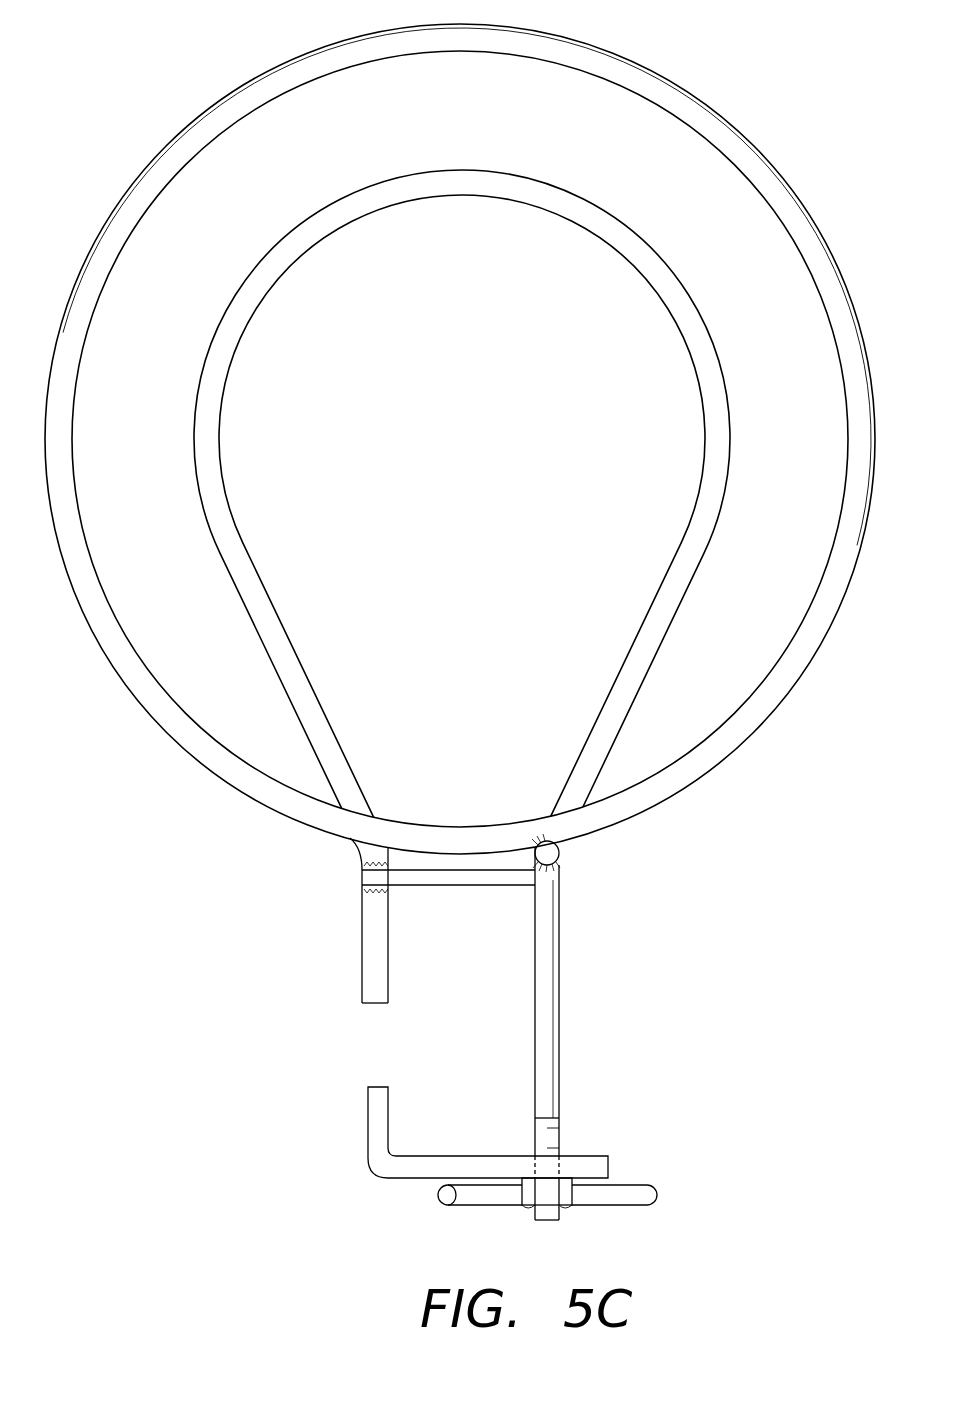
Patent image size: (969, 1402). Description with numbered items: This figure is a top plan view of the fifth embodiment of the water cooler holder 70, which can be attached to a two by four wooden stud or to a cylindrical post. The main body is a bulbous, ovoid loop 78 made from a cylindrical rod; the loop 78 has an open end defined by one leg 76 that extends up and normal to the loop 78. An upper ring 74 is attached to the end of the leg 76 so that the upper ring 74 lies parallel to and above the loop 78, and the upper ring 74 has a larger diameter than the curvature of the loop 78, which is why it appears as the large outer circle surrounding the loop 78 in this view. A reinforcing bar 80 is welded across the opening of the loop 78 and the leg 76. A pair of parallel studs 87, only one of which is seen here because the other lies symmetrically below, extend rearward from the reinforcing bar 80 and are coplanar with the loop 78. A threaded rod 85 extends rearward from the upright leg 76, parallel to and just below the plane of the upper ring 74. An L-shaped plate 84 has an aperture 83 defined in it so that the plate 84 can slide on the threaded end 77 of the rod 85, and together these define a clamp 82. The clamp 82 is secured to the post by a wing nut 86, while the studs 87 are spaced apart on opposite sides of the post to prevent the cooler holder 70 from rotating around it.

The water cooler holder 70 is at (768, 91).
The upper ring 74 is at (405, 57).
The bulbous, ovoid loop 78 is at (707, 450).
The reinforcing bar 80 is at (412, 878).
The parallel studs 87 is at (383, 967).
The leg 76 is at (548, 860).
The threaded rod 85 is at (545, 990).
The clamp 82 is at (593, 1053).
The threaded end 77 is at (560, 1128).
The L-shaped plate 84 is at (372, 1128).
The aperture 83 is at (535, 1170).
The wing nut 86 is at (567, 1203).